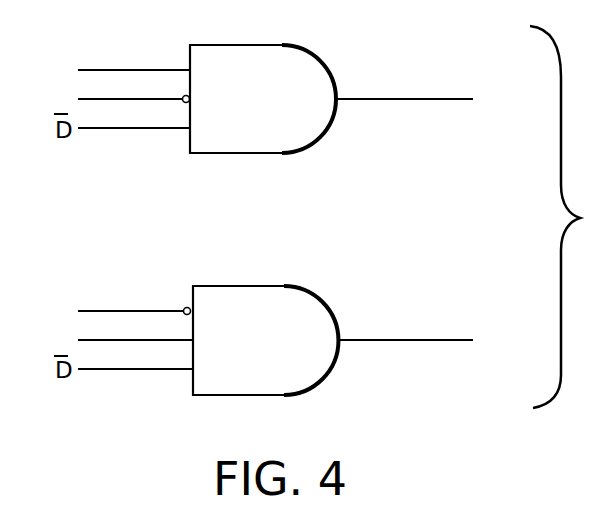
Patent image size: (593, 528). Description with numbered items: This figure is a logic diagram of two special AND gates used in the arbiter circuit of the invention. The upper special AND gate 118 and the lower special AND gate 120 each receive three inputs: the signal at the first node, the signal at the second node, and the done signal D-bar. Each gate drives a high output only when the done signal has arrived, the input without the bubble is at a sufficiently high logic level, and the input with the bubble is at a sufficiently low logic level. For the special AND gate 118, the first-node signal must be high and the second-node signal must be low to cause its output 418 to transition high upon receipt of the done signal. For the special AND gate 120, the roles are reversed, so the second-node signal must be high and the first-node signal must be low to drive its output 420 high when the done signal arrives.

The special AND gate 118 is at (278, 109).
The special AND gate 120 is at (279, 351).
The output 418 is at (429, 100).
The output 420 is at (430, 342).